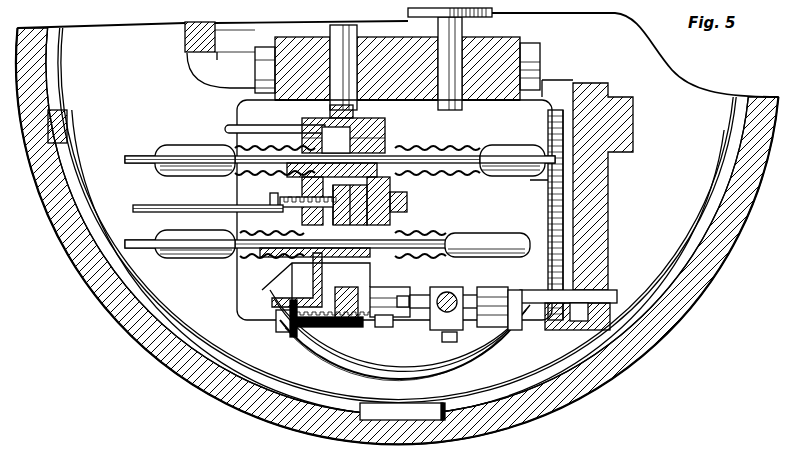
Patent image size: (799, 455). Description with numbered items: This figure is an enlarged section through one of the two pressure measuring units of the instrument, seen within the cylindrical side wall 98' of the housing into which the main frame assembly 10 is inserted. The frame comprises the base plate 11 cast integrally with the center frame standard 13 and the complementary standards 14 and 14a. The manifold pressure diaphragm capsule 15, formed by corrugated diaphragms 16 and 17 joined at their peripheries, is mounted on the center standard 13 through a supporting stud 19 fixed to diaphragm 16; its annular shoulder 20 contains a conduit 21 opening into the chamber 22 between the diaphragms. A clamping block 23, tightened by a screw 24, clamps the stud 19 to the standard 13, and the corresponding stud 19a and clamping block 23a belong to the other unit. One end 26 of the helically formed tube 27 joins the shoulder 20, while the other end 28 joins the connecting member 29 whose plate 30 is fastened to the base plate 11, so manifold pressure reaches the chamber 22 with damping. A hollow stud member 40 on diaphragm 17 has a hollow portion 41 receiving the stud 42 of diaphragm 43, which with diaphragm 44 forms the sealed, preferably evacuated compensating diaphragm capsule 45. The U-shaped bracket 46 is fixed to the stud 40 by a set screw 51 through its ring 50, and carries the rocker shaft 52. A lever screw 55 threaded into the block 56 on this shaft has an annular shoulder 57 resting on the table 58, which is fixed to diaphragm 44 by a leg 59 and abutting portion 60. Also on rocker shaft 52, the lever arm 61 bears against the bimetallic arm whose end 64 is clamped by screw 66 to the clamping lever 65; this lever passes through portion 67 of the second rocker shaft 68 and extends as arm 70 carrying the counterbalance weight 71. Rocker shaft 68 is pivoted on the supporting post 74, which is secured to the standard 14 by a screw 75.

The main frame assembly 10 is at (731, 243).
The cylindrical side wall 98' is at (398, 224).
The base plate 11 is at (711, 97).
The complementary standard 14a is at (185, 40).
The clamping block 23 is at (272, 33).
The center frame standard 13 is at (400, 30).
The supporting stud 19 is at (330, 31).
The supporting stud 19a is at (462, 28).
The clamping block 23a is at (522, 27).
The screw 24 is at (255, 64).
The end of tube 26 is at (260, 115).
The plate 30 is at (565, 180).
The connecting member 29 is at (565, 200).
The complementary standard 14 is at (600, 240).
The supporting post 74 is at (604, 292).
The screw 75 is at (574, 332).
The tube 27 is at (240, 126).
The conduit 21 is at (360, 117).
The annular shoulder 20 is at (385, 130).
The diaphragm 17 is at (165, 170).
The diaphragm capsule 15 is at (178, 145).
The diaphragm 16 is at (498, 145).
The chamber 22 is at (445, 148).
The hollow portion 41 is at (380, 172).
The hollow stud member 40 is at (392, 182).
The stud 42 is at (410, 203).
The U-shaped bracket 46 is at (408, 212).
The ring 50 is at (280, 198).
The set screw 51 is at (270, 208).
The end of tube 28 is at (200, 206).
The corrugated diaphragm 43 is at (235, 255).
The compensating diaphragm capsule 45 is at (158, 236).
The diaphragm 44 is at (262, 258).
The leg 59 is at (270, 297).
The abutting portion 60 is at (313, 272).
The rocker shaft 52 is at (355, 292).
The lever screw 55 is at (300, 330).
The annular shoulder 57 is at (282, 338).
The table 58 is at (276, 316).
The block 56 is at (340, 332).
The counterbalance weight 71 is at (478, 350).
The lever arm 61 is at (372, 287).
The clamping lever 65 is at (405, 296).
The screw 66 is at (385, 327).
The end of bimetallic arm 64 is at (430, 295).
The rocker shaft 68 is at (440, 320).
The portion of rocker shaft 67 is at (490, 280).
The arm 70 is at (512, 330).